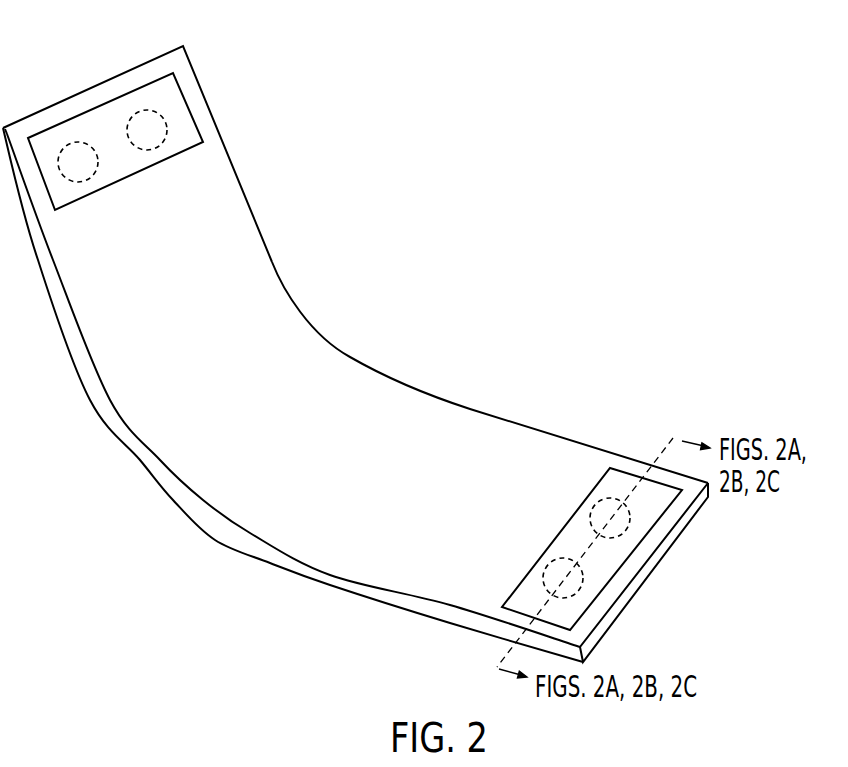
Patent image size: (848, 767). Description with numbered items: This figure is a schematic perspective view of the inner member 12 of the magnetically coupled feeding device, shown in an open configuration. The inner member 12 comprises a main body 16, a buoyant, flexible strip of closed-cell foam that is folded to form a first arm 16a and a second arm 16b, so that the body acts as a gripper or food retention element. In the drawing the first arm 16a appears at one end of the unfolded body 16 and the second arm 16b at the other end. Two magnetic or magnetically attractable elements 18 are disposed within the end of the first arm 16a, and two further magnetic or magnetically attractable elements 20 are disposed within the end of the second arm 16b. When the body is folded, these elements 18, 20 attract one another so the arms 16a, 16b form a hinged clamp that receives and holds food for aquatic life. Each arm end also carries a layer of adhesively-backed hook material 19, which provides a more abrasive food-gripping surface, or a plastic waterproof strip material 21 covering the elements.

The inner member 12 is at (355, 352).
The main body 16 is at (355, 352).
The first arm 16a is at (137, 152).
The second arm 16b is at (599, 540).
The magnetic or magnetically attractable element 18 is at (90, 177).
The layer of adhesively-backed hook material 19 is at (622, 470).
The magnetic or magnetically attractable element 20 is at (587, 515).
The plastic waterproof strip material 21 is at (191, 105).